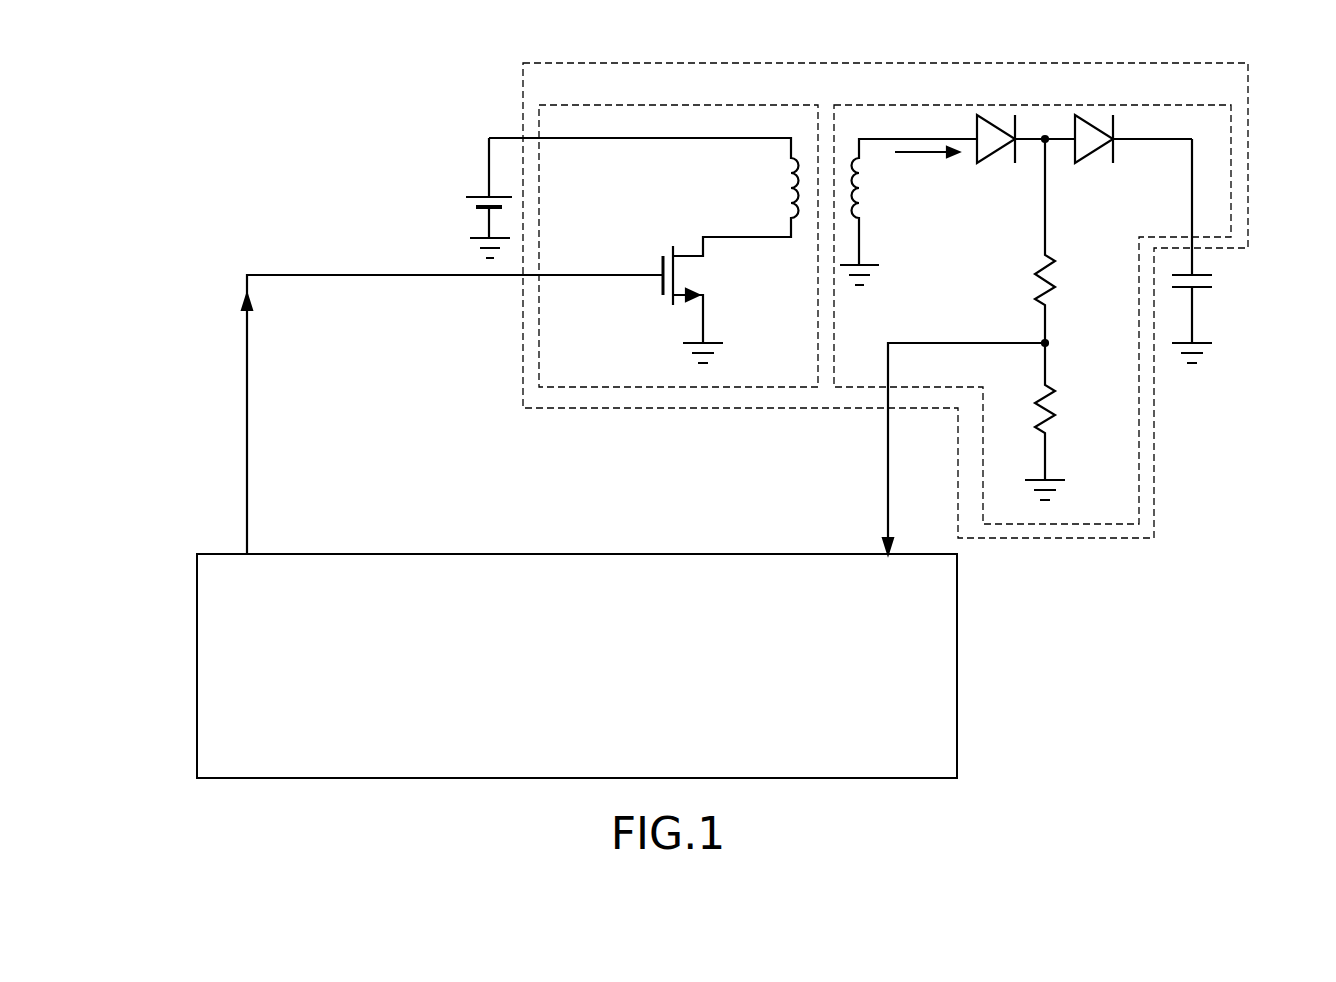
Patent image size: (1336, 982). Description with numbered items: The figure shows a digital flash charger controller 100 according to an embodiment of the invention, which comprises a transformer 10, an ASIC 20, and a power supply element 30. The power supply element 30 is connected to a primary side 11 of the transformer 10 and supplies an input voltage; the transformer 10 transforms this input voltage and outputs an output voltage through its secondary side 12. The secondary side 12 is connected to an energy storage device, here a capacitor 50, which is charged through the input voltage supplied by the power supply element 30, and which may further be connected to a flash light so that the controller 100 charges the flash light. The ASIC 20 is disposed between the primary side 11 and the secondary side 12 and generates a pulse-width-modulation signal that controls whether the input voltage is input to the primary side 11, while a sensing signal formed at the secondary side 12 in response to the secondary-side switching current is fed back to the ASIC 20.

The digital flash charger controller 100 is at (158, 111).
The transformer 10 is at (545, 63).
The primary side 11 is at (598, 105).
The secondary side 12 is at (858, 105).
The ASIC 20 is at (957, 684).
The power supply element 30 is at (472, 200).
The capacitor 50 is at (1213, 280).